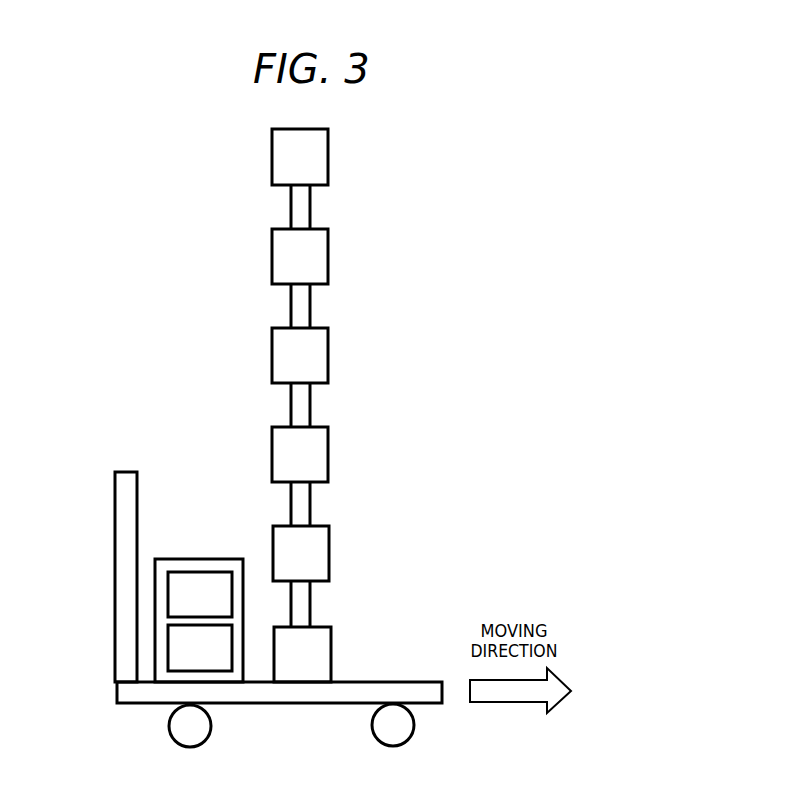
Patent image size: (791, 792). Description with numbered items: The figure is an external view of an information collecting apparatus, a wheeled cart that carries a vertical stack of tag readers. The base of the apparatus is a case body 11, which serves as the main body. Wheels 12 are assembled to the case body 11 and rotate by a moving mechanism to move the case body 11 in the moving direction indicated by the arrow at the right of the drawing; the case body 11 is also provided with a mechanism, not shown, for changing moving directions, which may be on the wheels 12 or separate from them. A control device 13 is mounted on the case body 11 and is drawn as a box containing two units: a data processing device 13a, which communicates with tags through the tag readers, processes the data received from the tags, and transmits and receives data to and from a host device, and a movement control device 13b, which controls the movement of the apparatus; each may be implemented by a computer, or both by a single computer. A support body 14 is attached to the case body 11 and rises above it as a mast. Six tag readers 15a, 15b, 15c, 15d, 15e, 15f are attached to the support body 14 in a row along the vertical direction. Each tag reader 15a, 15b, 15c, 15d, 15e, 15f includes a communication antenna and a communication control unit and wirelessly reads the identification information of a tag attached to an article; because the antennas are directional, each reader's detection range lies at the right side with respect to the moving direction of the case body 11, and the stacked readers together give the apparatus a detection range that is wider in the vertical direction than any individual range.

The case body 11 is at (252, 707).
The wheels 12 is at (168, 725).
The control device 13 is at (195, 559).
The data processing device 13a is at (168, 592).
The movement control device 13b is at (168, 645).
The support body 14 is at (290, 213).
The tag reader 15a is at (329, 153).
The tag reader 15b is at (329, 253).
The tag reader 15c is at (329, 352).
The tag reader 15d is at (329, 452).
The tag reader 15e is at (330, 555).
The tag reader 15f is at (332, 651).